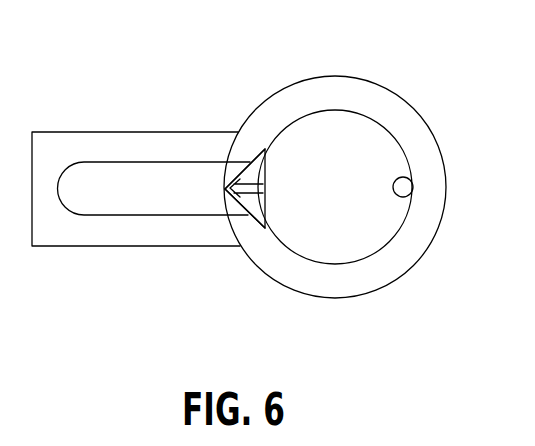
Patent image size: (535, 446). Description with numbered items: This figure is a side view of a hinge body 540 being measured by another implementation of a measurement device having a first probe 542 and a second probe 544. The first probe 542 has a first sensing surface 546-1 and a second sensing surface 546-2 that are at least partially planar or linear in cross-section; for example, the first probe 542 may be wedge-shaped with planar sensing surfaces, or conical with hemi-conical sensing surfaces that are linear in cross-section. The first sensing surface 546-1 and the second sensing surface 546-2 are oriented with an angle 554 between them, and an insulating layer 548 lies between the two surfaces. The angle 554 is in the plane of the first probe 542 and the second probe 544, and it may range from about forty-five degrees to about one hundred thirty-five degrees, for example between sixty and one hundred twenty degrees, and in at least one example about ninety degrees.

The hinge body 540 is at (76, 138).
The first probe 542 is at (281, 147).
The second probe 544 is at (399, 189).
The first sensing surface 546-1 is at (250, 162).
The second sensing surface 546-2 is at (250, 213).
The insulating layer 548 is at (233, 183).
The angle 554 is at (266, 192).